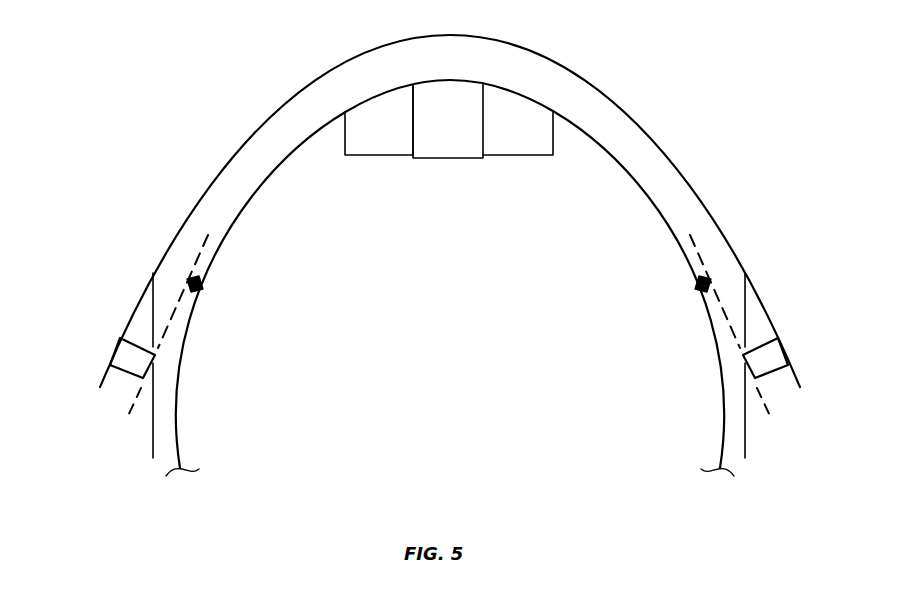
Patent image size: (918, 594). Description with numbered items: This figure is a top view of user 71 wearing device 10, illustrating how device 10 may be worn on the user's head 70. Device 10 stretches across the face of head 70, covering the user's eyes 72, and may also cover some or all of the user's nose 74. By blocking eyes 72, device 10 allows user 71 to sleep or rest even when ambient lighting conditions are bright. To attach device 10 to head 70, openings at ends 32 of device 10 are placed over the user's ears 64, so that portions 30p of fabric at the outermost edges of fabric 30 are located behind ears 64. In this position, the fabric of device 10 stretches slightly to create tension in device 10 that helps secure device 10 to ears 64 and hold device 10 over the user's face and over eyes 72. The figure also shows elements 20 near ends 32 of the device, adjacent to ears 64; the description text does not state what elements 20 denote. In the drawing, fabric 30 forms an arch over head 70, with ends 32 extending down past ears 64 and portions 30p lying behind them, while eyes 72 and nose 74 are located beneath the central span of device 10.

The device 10 is at (731, 168).
The attachment member 20 is at (125, 350).
The fabric 30 is at (620, 125).
The portions of fabric 30p is at (151, 442).
The ends 32 is at (75, 430).
The ears 64 is at (140, 393).
The head 70 is at (628, 170).
The user 71 is at (672, 214).
The eyes 72 is at (377, 149).
The nose 74 is at (450, 135).